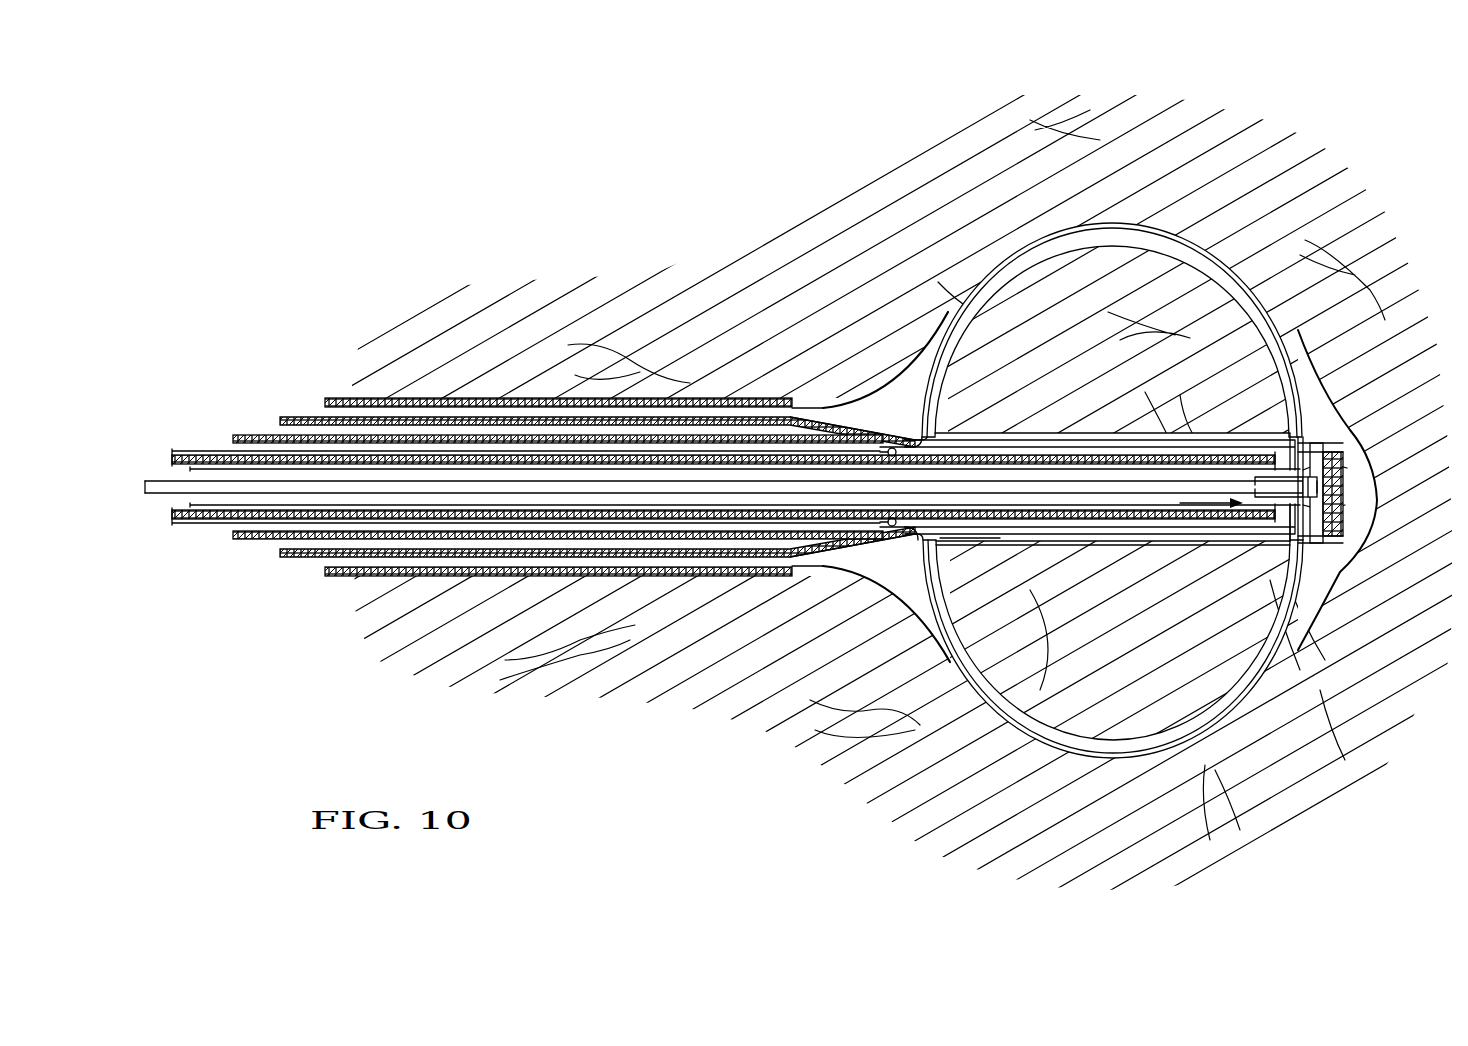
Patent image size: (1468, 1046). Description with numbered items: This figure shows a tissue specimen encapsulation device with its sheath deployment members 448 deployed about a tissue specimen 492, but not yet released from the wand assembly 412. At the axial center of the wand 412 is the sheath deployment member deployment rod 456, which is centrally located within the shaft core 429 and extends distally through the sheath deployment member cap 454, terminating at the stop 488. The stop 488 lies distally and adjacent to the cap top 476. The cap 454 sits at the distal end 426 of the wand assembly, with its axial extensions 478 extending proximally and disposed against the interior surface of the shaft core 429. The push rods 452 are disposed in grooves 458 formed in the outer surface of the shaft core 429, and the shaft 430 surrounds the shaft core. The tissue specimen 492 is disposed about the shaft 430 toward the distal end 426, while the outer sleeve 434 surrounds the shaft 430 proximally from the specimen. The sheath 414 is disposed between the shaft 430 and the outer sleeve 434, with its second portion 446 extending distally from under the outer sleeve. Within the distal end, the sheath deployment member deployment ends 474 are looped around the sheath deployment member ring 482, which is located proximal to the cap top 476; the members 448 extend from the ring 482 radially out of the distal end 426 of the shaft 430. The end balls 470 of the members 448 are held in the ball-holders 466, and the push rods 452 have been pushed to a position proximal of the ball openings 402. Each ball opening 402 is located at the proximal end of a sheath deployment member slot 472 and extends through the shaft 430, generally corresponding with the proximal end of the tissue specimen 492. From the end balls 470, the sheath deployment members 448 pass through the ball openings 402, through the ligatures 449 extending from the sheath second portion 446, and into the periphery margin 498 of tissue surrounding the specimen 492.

The wand assembly 412 is at (330, 388).
The outer sleeve 434 is at (332, 578).
The sheath 414 is at (378, 559).
The push rods 452 is at (812, 560).
The shaft 430 is at (456, 541).
The shaft core 429 is at (528, 523).
The grooves 458 is at (745, 560).
The sheath deployment member deployment rod 456 is at (600, 495).
The second portion 446 is at (838, 420).
The end balls 470 is at (892, 447).
The ball-holders 466 is at (940, 433).
The ligatures 449 is at (930, 560).
The ball openings 402 is at (940, 565).
The sheath deployment members 448 is at (1066, 229).
The periphery margin 498 is at (988, 268).
The tissue specimen 492 is at (1133, 682).
The sheath deployment member slot 472 is at (1015, 543).
The sheath deployment member cap 454 is at (1145, 523).
The axial extensions 478 is at (1250, 466).
The sheath deployment member deployment ends 474 is at (1262, 517).
The sheath deployment member ring 482 is at (1288, 553).
The distal end 426 is at (1350, 432).
The cap top 476 is at (1393, 462).
The stop 488 is at (1378, 501).